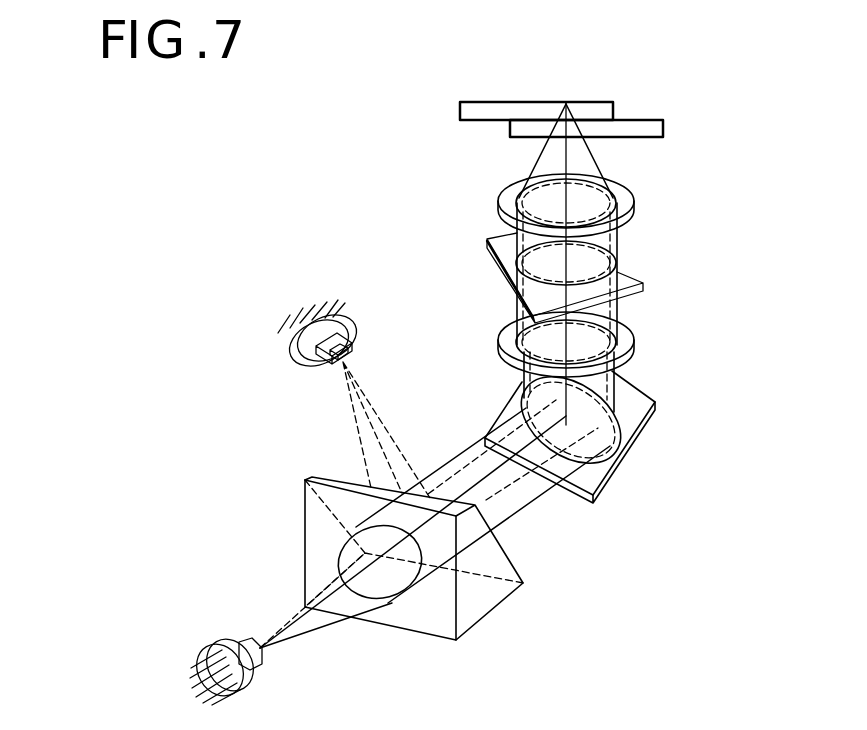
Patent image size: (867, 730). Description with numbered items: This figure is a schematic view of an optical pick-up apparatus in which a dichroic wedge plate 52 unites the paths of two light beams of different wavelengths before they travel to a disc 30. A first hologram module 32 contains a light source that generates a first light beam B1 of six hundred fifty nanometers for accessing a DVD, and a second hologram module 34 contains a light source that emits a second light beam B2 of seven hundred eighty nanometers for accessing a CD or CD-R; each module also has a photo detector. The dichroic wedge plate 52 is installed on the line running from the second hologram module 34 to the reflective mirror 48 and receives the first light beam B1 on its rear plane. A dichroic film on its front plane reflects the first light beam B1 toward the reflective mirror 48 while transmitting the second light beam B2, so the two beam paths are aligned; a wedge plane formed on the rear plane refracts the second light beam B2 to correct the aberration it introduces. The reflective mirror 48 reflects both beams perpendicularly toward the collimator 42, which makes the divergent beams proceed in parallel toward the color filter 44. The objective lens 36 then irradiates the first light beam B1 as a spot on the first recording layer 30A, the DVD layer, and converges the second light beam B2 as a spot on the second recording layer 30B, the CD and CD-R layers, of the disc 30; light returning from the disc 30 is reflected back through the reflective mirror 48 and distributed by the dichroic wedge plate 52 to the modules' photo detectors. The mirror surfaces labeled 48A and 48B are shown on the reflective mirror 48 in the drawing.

The disc 30 is at (579, 47).
The first recording layer 30A is at (664, 123).
The second recording layer 30B is at (600, 102).
The first hologram module 32 is at (340, 325).
The second hologram module 34 is at (226, 642).
The objective lens 36 is at (630, 194).
The collimator 42 is at (637, 339).
The color filter 44 is at (643, 290).
The reflective mirror 48 is at (656, 403).
The first surface of beam splitter plate 48A is at (637, 402).
The second surface of beam splitter plate 48B is at (630, 451).
The dichroic wedge plate 52 is at (523, 580).
The first light beam B1 is at (394, 437).
The second light beam B2 is at (318, 627).